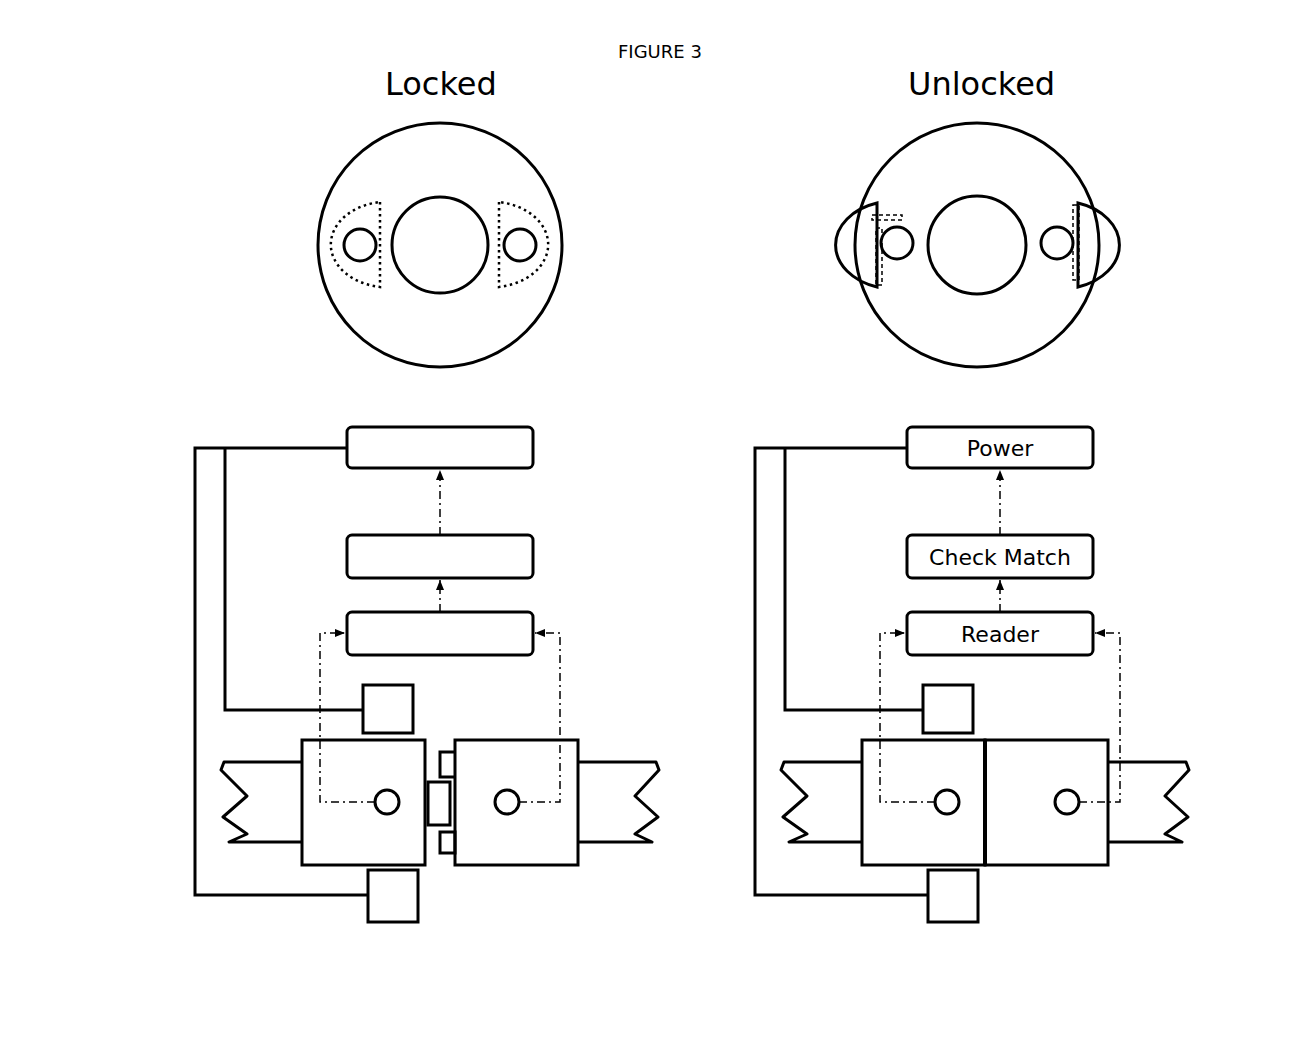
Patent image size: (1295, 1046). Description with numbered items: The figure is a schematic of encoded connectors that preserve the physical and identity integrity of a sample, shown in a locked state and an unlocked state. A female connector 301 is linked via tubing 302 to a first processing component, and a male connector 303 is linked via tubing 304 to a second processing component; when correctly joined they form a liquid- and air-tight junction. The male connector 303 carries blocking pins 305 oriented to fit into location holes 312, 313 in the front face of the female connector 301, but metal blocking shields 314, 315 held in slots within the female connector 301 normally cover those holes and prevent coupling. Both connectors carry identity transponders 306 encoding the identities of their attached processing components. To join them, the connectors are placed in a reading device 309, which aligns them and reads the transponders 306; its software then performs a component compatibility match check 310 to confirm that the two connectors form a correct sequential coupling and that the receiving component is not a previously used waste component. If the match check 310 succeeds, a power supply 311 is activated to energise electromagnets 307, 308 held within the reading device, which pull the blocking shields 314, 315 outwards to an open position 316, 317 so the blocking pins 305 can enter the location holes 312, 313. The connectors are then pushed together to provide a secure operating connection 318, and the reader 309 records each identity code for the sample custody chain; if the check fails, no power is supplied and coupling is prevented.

The female connector 301 is at (299, 799).
The tubing 302 is at (218, 755).
The male connector 303 is at (516, 738).
The tubing 304 is at (648, 845).
The blocking pins 305 is at (444, 766).
The identity transponders 306 is at (378, 813).
The electromagnet 307 is at (419, 897).
The electromagnet 308 is at (416, 708).
The reading device 309 is at (537, 636).
The component compatibility match check 310 is at (537, 554).
The power supply 311 is at (537, 445).
The location hole 312 is at (340, 247).
The location hole 313 is at (538, 249).
The metal blocking shield 314 is at (374, 201).
The metal blocking shield 315 is at (503, 200).
The open position 316 is at (876, 196).
The open position 317 is at (1086, 206).
The secure operating connection 318 is at (990, 806).